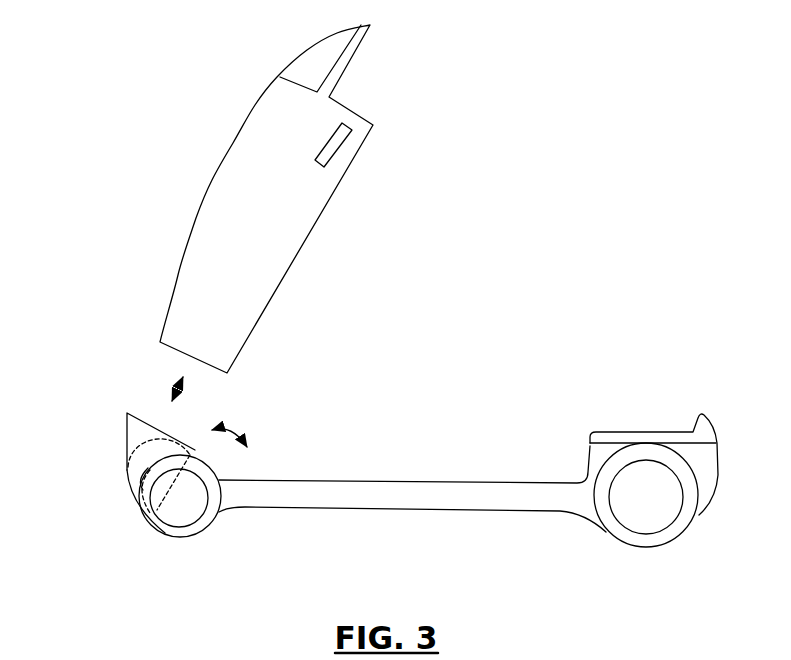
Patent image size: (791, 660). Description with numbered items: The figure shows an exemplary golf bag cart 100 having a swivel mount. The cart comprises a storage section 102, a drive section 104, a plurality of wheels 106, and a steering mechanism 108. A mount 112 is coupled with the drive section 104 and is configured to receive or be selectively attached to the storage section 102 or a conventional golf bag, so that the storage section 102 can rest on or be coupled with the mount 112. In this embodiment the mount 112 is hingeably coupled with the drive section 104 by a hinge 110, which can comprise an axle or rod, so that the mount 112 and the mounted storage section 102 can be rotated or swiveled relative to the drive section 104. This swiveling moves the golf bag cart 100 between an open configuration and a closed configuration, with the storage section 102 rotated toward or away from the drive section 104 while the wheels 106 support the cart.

The golf bag cart 100 is at (617, 236).
The storage section 102 is at (265, 199).
The drive section 104 is at (505, 502).
The wheels 106 is at (183, 512).
The steering mechanism 108 is at (328, 146).
The hinge 110 is at (140, 488).
The mount 112 is at (135, 436).